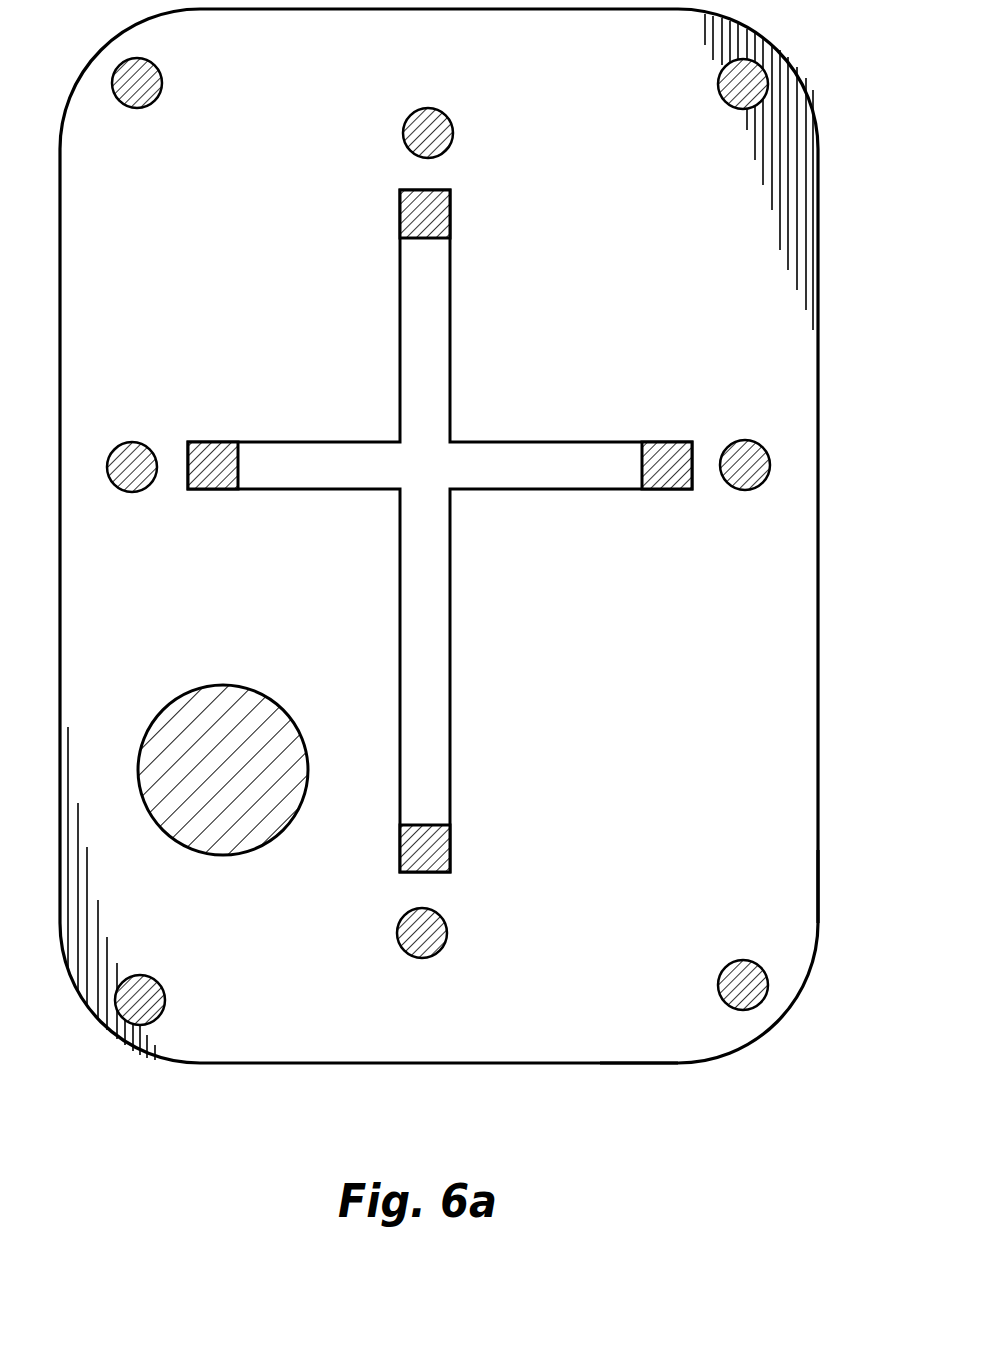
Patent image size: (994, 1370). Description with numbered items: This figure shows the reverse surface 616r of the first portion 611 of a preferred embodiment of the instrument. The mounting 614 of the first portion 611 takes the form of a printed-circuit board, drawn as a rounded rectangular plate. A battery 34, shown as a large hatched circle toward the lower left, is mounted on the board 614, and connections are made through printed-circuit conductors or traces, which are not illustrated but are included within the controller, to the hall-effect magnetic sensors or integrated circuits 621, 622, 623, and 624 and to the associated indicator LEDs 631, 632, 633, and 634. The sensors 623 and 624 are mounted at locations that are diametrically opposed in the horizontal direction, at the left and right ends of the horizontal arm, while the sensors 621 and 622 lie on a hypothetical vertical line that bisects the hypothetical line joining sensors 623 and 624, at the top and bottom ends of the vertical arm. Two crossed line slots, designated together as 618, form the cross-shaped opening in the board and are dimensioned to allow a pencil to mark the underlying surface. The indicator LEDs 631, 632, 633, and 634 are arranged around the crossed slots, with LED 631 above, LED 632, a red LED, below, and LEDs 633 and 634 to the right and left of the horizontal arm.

The first portion 611 is at (211, 1147).
The mounting 614 is at (657, 1065).
The reverse surface 616r is at (800, 913).
The crossed line slots 618 is at (447, 619).
The hall-effect magnetic sensor 621 is at (450, 217).
The hall-effect magnetic sensor 622 is at (450, 851).
The hall-effect magnetic sensor 623 is at (659, 421).
The hall-effect magnetic sensor 624 is at (202, 441).
The indicator LED 631 is at (453, 135).
The indicator LED 632 is at (430, 958).
The indicator LED 633 is at (746, 490).
The indicator LED 634 is at (133, 492).
The battery 34 is at (210, 684).